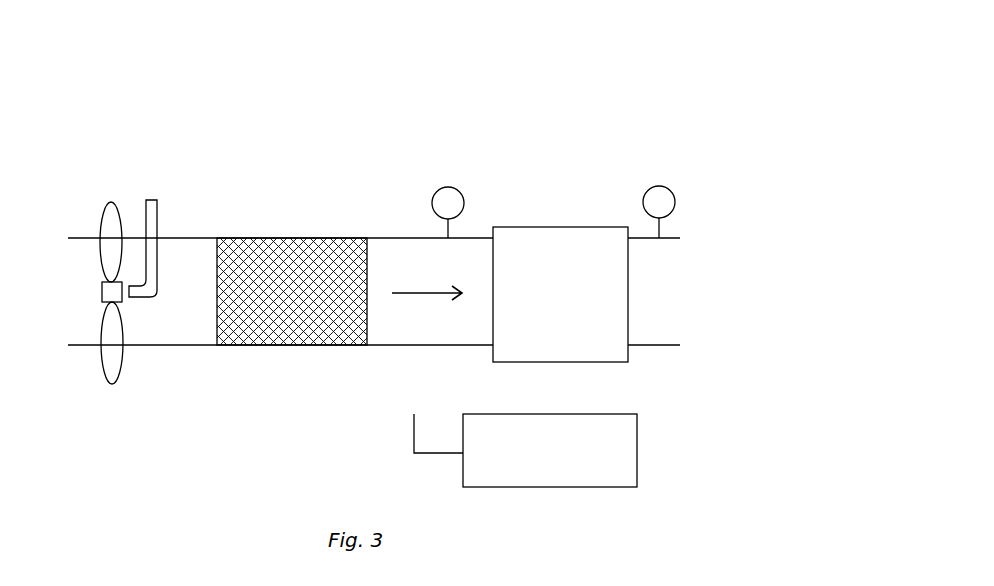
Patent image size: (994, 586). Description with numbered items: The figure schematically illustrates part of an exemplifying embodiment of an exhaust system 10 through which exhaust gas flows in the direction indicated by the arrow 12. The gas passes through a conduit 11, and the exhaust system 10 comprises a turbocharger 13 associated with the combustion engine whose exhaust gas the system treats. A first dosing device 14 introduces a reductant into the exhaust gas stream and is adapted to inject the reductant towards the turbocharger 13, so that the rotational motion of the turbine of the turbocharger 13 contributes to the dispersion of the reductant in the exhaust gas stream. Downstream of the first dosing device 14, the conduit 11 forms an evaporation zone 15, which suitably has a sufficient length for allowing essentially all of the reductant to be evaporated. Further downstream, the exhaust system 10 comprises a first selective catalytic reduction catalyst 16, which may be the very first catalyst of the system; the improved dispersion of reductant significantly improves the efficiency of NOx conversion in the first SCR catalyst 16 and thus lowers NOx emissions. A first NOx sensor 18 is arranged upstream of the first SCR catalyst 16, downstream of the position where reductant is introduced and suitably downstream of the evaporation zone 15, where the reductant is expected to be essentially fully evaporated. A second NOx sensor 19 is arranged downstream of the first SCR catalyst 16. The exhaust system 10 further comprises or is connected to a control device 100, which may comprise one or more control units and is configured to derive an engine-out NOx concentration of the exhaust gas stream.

The exhaust system 10 is at (519, 96).
The conduit 11 is at (193, 238).
The arrow 12 is at (427, 282).
The turbocharger 13 is at (112, 345).
The first dosing device 14 is at (148, 200).
The evaporation zone 15 is at (283, 260).
The first selective catalytic reduction catalyst 16 is at (560, 294).
The first NOx sensor 18 is at (447, 197).
The second NOx sensor 19 is at (657, 198).
The control device 100 is at (525, 450).